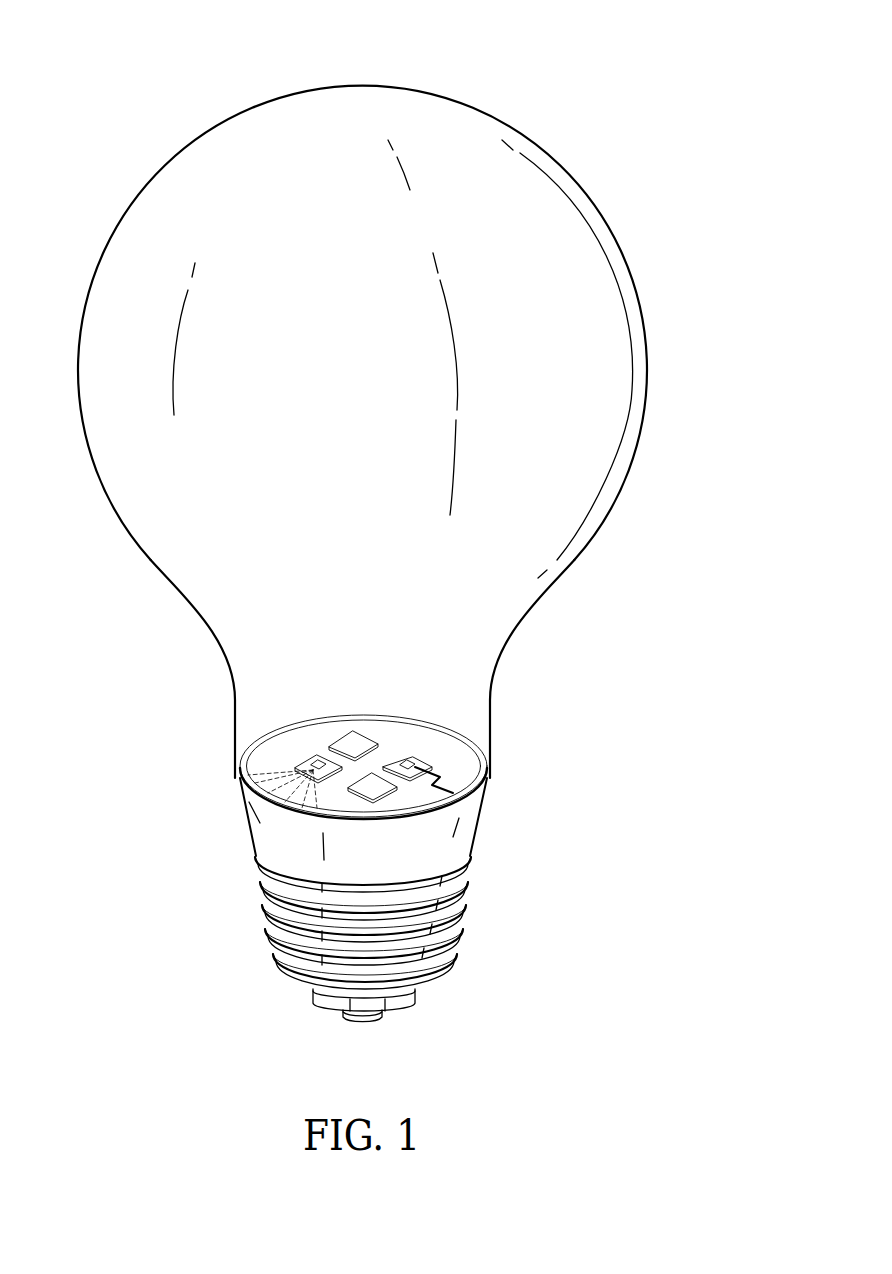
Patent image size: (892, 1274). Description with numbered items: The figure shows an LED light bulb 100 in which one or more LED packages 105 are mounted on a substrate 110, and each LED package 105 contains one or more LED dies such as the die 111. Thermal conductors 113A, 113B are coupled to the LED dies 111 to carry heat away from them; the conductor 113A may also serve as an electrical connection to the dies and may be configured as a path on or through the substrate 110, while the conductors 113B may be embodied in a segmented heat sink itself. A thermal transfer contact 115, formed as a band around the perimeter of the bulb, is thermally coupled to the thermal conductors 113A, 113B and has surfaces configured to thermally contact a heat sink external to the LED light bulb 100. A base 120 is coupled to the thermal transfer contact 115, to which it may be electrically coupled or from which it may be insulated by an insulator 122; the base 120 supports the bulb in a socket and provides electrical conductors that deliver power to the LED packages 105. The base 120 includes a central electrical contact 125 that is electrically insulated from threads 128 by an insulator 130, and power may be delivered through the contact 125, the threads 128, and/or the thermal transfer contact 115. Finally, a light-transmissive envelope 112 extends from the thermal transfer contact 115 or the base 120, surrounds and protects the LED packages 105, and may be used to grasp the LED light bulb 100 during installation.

The LED light bulb 100 is at (492, 69).
The LED package 105 is at (367, 737).
The substrate 110 is at (303, 738).
The LED die 111 is at (408, 763).
The light-transmissive envelope 112 is at (128, 211).
The thermal conductor 113A is at (443, 772).
The thermal conductor 113B is at (267, 771).
The thermal transfer contact 115 is at (477, 815).
The base 120 is at (464, 979).
The insulator 122 is at (255, 855).
The central electrical contact 125 is at (350, 1022).
The threads 128 is at (268, 953).
The insulator 130 is at (403, 1003).